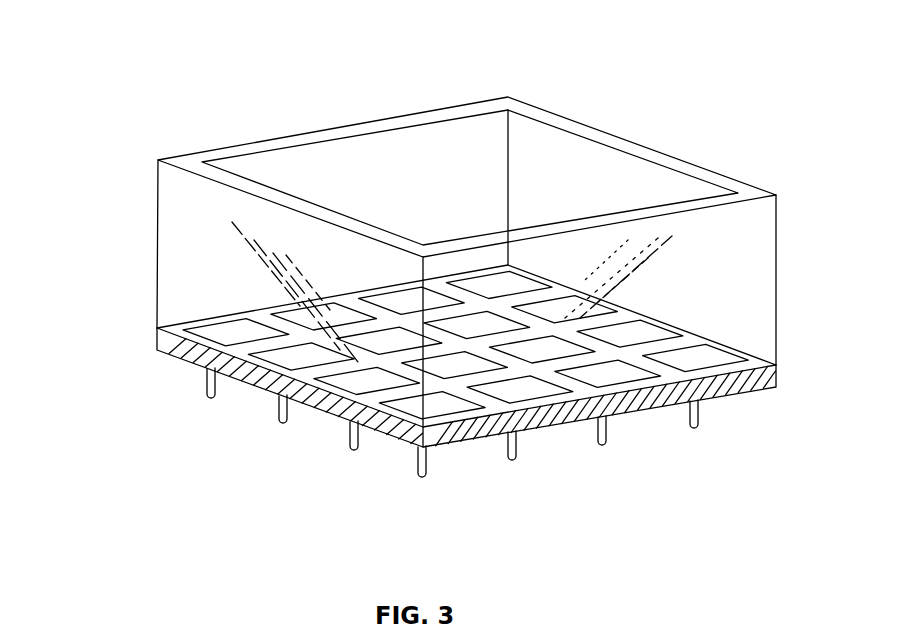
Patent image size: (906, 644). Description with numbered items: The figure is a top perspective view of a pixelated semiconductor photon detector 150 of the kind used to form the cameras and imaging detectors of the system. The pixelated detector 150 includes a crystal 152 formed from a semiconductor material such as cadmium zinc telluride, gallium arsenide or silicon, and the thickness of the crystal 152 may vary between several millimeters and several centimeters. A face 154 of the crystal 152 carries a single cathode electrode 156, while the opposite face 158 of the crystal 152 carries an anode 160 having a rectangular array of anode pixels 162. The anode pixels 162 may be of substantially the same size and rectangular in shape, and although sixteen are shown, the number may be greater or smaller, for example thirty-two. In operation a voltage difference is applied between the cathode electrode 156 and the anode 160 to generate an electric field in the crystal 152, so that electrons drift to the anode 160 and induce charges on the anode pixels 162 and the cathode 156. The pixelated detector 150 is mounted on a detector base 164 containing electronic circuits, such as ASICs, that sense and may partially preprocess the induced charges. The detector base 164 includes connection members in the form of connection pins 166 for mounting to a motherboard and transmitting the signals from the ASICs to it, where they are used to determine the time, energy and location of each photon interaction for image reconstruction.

The pixelated semiconductor photon detector 150 is at (116, 47).
The crystal 152 is at (762, 292).
The face of the crystal 154 is at (186, 159).
The cathode electrode 156 is at (310, 165).
The opposite face of the crystal 158 is at (190, 366).
The anode 160 is at (415, 348).
The anode pixels 162 is at (215, 335).
The detector base 164 is at (267, 388).
The connection pins 166 is at (353, 452).